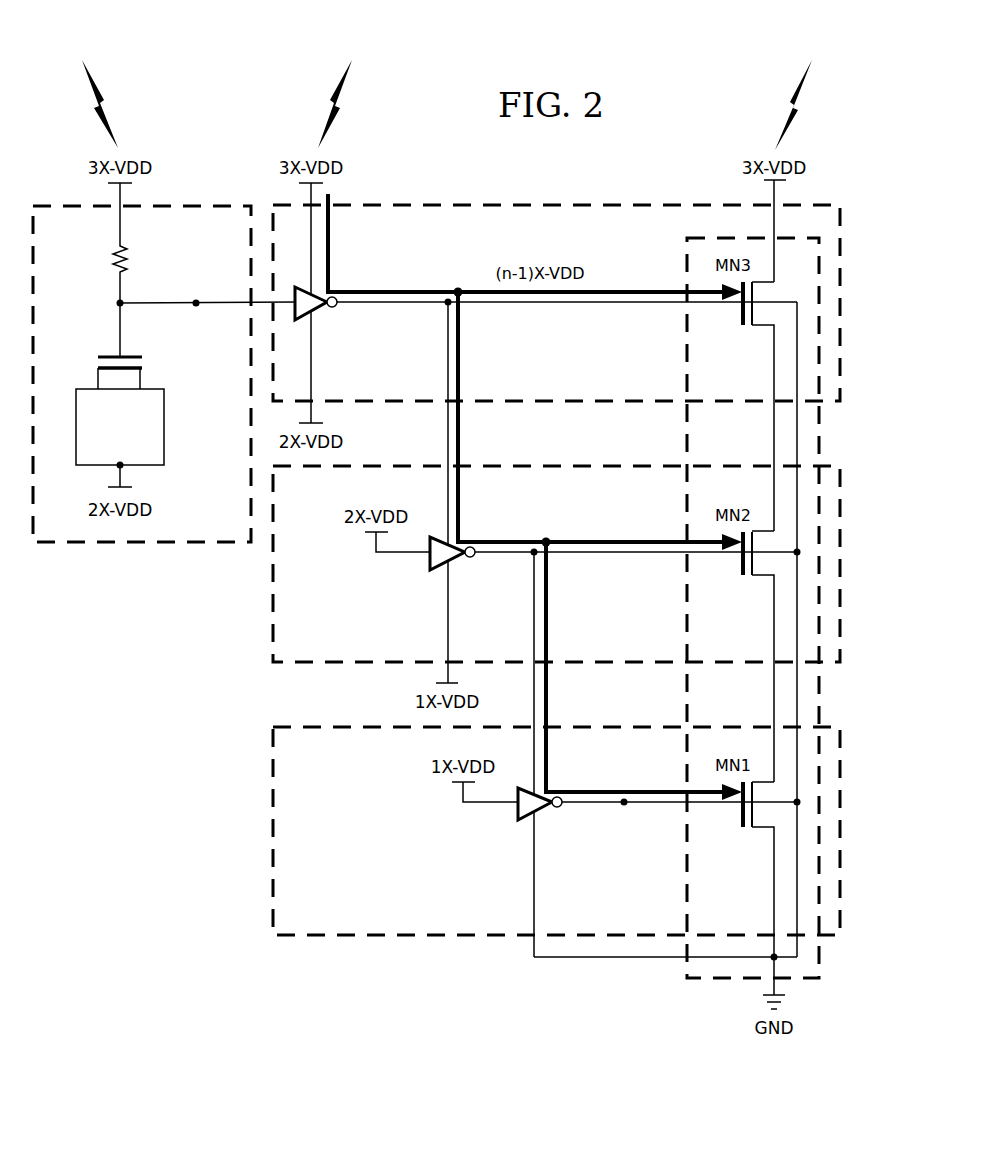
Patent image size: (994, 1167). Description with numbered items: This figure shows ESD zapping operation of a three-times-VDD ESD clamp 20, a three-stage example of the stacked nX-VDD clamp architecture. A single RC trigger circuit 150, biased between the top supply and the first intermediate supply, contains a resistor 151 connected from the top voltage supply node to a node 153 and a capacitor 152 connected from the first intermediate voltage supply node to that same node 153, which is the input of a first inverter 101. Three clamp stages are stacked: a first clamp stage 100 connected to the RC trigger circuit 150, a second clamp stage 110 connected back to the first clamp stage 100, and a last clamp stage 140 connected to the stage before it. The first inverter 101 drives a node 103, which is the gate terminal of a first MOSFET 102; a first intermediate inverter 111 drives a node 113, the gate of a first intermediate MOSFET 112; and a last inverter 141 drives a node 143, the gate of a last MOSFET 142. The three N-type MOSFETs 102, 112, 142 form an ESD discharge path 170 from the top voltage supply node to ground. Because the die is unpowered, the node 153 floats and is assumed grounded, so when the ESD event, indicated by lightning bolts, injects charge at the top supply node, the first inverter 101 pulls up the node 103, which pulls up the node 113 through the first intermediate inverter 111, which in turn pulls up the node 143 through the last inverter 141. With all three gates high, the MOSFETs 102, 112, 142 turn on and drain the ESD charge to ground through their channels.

The 3X-VDD ESD clamp 20 is at (228, 978).
The first clamp stage 100 is at (848, 268).
The first inverter 101 is at (320, 312).
The first MOSFET 102 is at (740, 320).
The node 103 is at (446, 306).
The second clamp stage 110 is at (848, 527).
The first intermediate inverter 111 is at (430, 565).
The first intermediate MOSFET 112 is at (742, 570).
The node 113 is at (532, 557).
The last clamp stage 140 is at (848, 862).
The last inverter 141 is at (518, 815).
The last MOSFET 142 is at (742, 822).
The node 143 is at (626, 806).
The RC trigger circuit 150 is at (164, 394).
The resistor 151 is at (117, 258).
The capacitor 152 is at (128, 356).
The node 153 is at (196, 300).
The ESD discharge path 170 is at (681, 265).